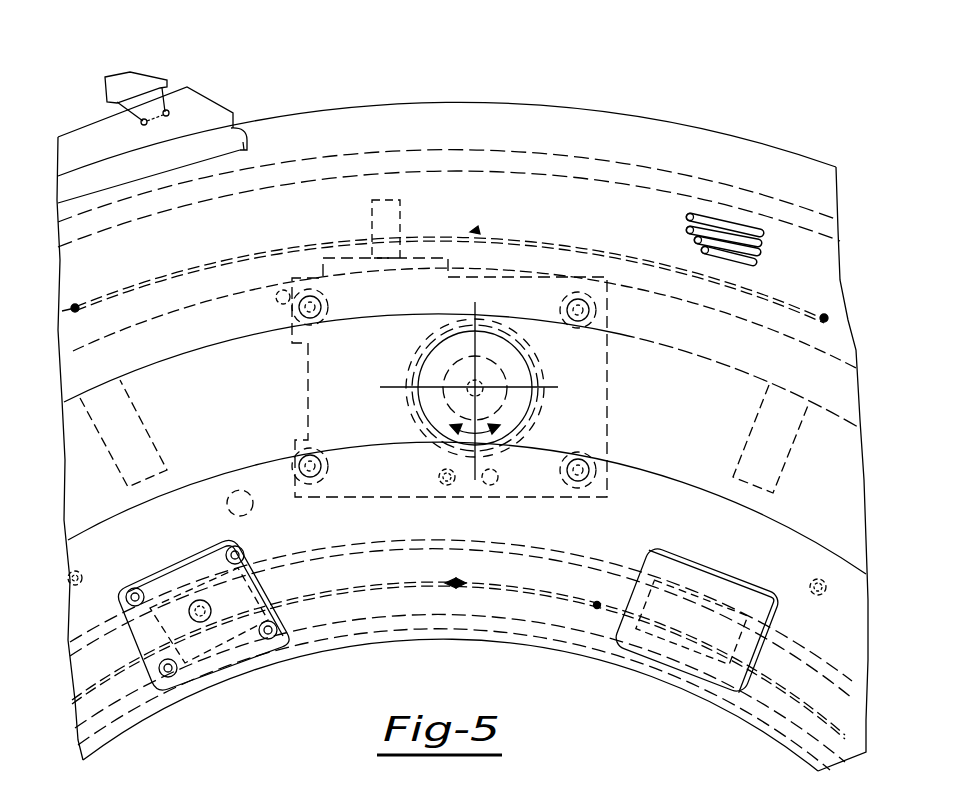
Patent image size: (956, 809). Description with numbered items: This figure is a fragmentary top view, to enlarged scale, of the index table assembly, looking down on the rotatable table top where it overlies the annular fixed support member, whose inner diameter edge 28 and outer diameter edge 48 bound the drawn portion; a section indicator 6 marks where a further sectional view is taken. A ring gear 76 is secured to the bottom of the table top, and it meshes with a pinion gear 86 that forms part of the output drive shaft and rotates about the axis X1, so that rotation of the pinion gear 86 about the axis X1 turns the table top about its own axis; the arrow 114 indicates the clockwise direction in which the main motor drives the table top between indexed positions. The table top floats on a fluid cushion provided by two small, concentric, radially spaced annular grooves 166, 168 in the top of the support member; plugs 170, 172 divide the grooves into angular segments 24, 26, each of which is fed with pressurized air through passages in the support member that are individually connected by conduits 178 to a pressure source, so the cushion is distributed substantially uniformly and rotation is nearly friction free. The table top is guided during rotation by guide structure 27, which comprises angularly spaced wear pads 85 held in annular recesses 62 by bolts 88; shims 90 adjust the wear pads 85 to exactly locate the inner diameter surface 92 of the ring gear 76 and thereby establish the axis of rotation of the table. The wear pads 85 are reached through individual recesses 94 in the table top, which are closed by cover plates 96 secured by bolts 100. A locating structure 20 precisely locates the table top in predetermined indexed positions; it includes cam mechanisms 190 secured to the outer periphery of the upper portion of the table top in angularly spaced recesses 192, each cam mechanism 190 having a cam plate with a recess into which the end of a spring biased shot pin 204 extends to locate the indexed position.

The locating structure 20 is at (168, 57).
The air cushion segment 24 is at (451, 266).
The air cushion segment 26 is at (596, 605).
The guide structure 27 is at (268, 639).
The inner diameter edge 28 is at (553, 643).
The outer diameter edge 48 is at (566, 74).
The annular recesses 62 is at (187, 557).
The ring gear 76 is at (380, 457).
The wear pads 85 is at (164, 705).
The pinion gear 86 is at (540, 378).
The bolts 88 is at (190, 576).
The shims 90 is at (222, 650).
The inner diameter surface 92 is at (461, 610).
The recesses 94 is at (125, 735).
The cover plates 96 is at (143, 585).
The bolts 100 is at (130, 602).
The arrow 114 is at (420, 68).
The annular groove 166 is at (117, 290).
The annular groove 168 is at (442, 568).
The plug 170 is at (498, 184).
The plug 172 is at (494, 573).
The conduits 178 is at (763, 228).
The cam mechanisms 190 is at (198, 106).
The recesses 192 is at (243, 122).
The shot pin 204 is at (113, 92).
The axis X1 is at (470, 378).
The section line 6- 6 is at (689, 88).